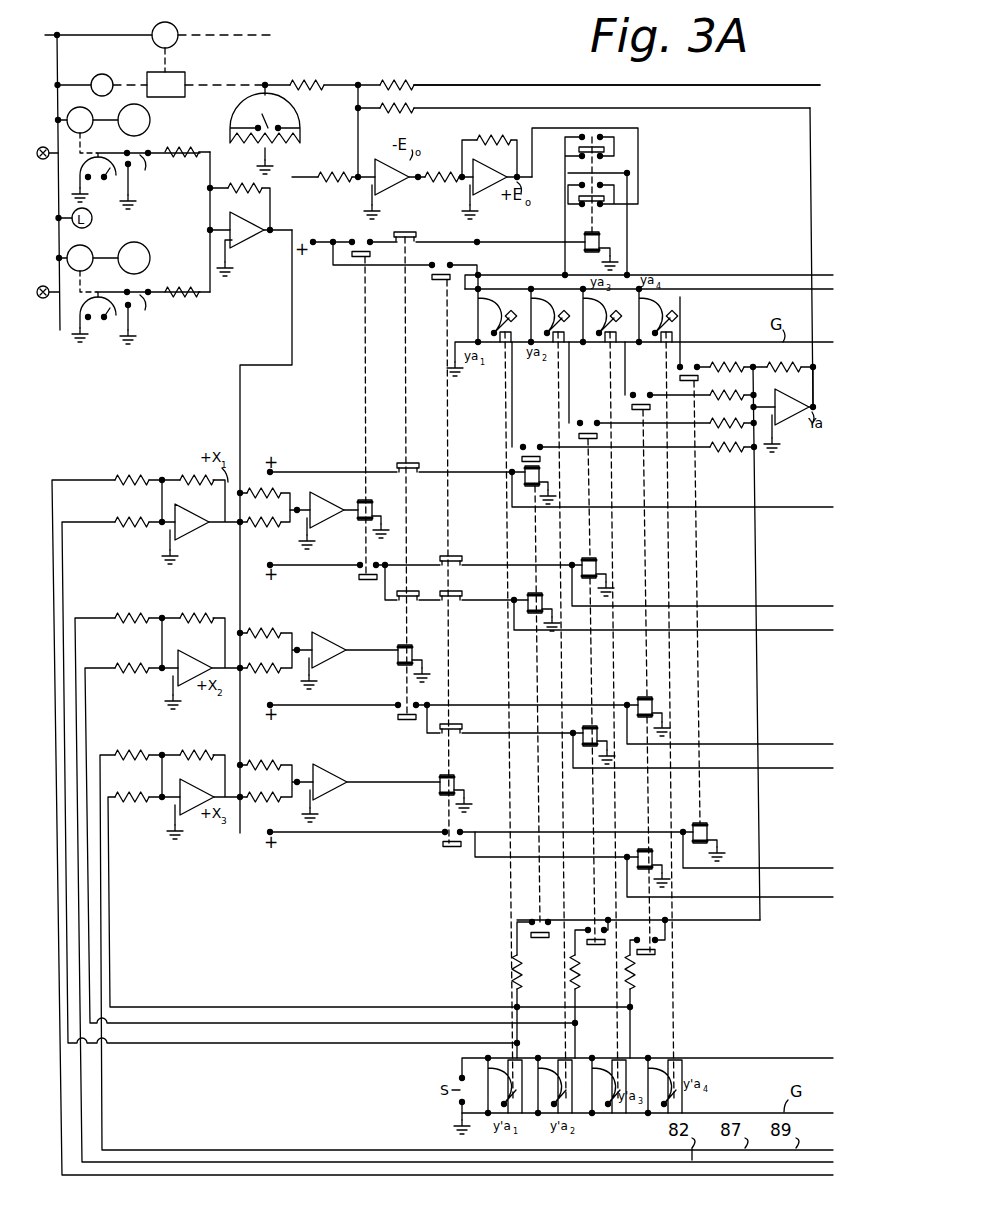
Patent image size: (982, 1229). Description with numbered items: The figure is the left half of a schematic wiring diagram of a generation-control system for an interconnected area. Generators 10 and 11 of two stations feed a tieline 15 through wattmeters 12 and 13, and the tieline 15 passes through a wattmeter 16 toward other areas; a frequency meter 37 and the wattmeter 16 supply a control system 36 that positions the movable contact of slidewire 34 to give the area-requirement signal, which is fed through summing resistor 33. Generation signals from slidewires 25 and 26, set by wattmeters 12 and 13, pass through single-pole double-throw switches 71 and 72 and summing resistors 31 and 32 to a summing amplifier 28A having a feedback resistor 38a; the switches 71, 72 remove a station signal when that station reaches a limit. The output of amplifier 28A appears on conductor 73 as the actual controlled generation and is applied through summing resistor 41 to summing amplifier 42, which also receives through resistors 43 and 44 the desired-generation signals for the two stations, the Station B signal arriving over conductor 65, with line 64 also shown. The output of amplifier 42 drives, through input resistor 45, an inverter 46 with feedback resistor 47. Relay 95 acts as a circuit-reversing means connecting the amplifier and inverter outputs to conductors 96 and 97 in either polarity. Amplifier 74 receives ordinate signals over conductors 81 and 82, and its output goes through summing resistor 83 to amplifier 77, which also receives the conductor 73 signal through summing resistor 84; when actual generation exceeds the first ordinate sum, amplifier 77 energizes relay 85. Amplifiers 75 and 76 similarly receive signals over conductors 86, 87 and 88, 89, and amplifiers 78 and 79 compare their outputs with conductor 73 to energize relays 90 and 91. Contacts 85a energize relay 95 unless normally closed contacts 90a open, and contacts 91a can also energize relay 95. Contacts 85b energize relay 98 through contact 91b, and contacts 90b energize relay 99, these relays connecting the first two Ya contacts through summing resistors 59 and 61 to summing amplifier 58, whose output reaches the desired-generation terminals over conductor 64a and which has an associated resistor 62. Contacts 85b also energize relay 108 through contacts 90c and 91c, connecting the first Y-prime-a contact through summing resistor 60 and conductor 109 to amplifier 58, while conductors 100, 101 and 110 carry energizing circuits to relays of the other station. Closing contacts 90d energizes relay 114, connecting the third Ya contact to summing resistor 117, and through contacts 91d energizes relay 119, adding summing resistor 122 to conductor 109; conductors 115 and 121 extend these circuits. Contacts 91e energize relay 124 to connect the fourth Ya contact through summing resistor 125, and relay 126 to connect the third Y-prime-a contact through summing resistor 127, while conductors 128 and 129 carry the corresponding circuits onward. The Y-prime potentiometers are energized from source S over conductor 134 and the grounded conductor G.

The tieline 15 is at (114, 35).
The wattmeter 16 is at (172, 30).
The frequency meter 37 is at (102, 74).
The control system 36 is at (182, 78).
The wattmeter 12 is at (77, 120).
The generator 10 is at (150, 118).
The slidewire 25 is at (130, 177).
The single-pole, double-throw switch 71 is at (141, 182).
The summing resistor 31 is at (176, 151).
The wattmeter 13 is at (86, 248).
The generator 11 is at (152, 250).
The slidewire 26 is at (130, 316).
The single-pole, double-throw switch 72 is at (145, 319).
The summing resistor 32 is at (178, 288).
The feedback resistor 38a is at (240, 196).
The summing amplifier 28A is at (251, 244).
The conductor 73 is at (290, 305).
The slidewire 34 is at (290, 106).
The summing resistor 33 is at (320, 80).
The summing and feedback resistor 44 is at (400, 80).
The conductor 65 is at (774, 85).
The summing and feedback resistor 43 is at (414, 105).
The line 64 is at (812, 172).
The summing resistor 41 is at (340, 171).
The summing amplifier 42 is at (386, 163).
The input resistor 45 is at (448, 171).
The inverter 46 is at (500, 166).
The feedback resistor 47 is at (493, 138).
The relay 95 is at (603, 236).
The contacts of relay 85 85a is at (359, 242).
The normally closed contacts of relay 90 90a is at (402, 232).
The contacts of relay 91 91a is at (446, 264).
The conductor 97 is at (745, 275).
The conductor 96 is at (772, 298).
The summing resistor 125 is at (735, 360).
The resistor 62 is at (780, 364).
The summing resistor 117 is at (738, 392).
The summing resistor 61 is at (735, 410).
The summing resistor 59 is at (735, 436).
The summing amplifier 58 is at (785, 420).
The conductor 64a is at (812, 440).
The normally closed contacts of relay 90 90b is at (425, 458).
The relay 99 is at (534, 695).
The conductor 100 is at (784, 505).
The conductor 82 is at (57, 480).
The conductor 81 is at (78, 530).
The summing amplifier 74 is at (188, 532).
The summing resistor 84 is at (265, 502).
The summing resistor 83 is at (268, 532).
The amplifier 77 is at (324, 505).
The relay 85 is at (374, 510).
The conductor 87 is at (79, 618).
The conductor 86 is at (88, 668).
The amplifier 75 is at (191, 651).
The amplifier 78 is at (324, 645).
The relay 90 is at (412, 651).
The conductor 89 is at (102, 755).
The conductor 88 is at (112, 810).
The amplifier 76 is at (191, 789).
The amplifier 79 is at (328, 772).
The relay 91 is at (454, 787).
The contacts of relay 85 85b is at (360, 568).
The normally closed contact of relay 91 91b is at (448, 560).
The relay 98 is at (593, 579).
The conductor 101 is at (777, 606).
The normally closed contacts of relay 90 90c is at (412, 582).
The normally closed contacts of relay 91 91c is at (450, 592).
The relay 108 is at (537, 594).
The conductor 110 is at (800, 636).
The normally open contacts of relay 90 90d is at (400, 710).
The normally closed contacts of relay 91 91d is at (450, 729).
The relay 114 is at (646, 697).
The conductor 115 is at (782, 744).
The relay 119 is at (600, 730).
The conductor 121 is at (808, 769).
The contacts of relay 91 91e is at (444, 838).
The relay 124 is at (706, 832).
The conductor 128 is at (784, 868).
The relay 126 is at (665, 848).
The conductor 129 is at (795, 903).
The conductor 109 is at (722, 928).
The summing resistor 60 is at (522, 970).
The summing resistor 122 is at (580, 970).
The summing resistor 127 is at (632, 970).
The conductor 134 is at (766, 1057).